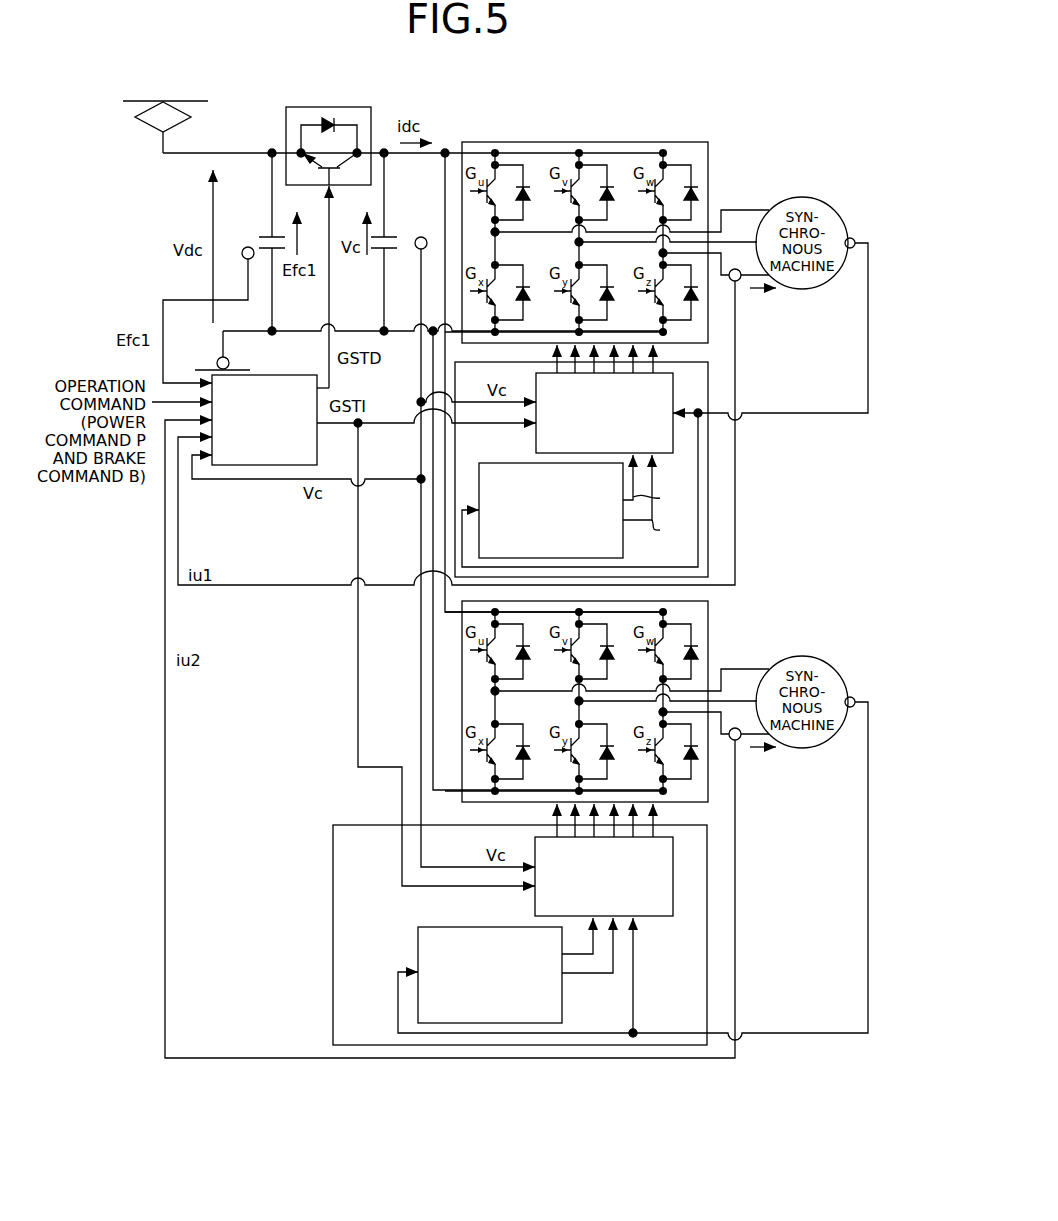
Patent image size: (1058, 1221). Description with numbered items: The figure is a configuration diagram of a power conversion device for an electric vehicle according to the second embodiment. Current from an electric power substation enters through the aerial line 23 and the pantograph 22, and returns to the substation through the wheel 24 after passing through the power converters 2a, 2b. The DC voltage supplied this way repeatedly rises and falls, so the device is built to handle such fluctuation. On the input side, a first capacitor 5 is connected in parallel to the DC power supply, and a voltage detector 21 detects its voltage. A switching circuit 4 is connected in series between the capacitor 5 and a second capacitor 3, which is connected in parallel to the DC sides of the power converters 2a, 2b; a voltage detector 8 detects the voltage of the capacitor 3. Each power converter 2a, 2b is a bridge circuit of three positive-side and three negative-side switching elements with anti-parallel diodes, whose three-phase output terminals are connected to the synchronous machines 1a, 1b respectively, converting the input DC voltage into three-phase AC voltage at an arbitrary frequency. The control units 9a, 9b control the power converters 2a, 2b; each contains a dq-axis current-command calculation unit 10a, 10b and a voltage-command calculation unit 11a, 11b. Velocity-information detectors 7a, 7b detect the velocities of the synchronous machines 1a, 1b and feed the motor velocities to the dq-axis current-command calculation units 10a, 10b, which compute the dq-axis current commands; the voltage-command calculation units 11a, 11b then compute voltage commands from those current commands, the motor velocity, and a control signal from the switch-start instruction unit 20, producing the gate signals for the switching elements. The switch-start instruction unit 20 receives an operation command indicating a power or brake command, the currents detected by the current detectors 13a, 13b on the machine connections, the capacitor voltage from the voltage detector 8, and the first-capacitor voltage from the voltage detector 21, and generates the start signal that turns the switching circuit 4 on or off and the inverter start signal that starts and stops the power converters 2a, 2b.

The synchronous machine 1a is at (800, 197).
The synchronous machine 1b is at (800, 656).
The power converter 2a is at (575, 142).
The power converter 2b is at (708, 605).
The capacitor 3 is at (387, 226).
The switching circuit 4 is at (325, 107).
The capacitor 5 is at (265, 231).
The velocity-information detector 7a is at (850, 238).
The velocity-information detector 7b is at (850, 697).
The voltage detector 8 is at (419, 250).
The control unit 9a is at (708, 475).
The control unit 9b is at (333, 935).
The dq-axis current-command calculation unit 10a is at (479, 473).
The dq-axis current-command calculation unit 10b is at (418, 942).
The voltage-command calculation unit 11a is at (673, 388).
The voltage-command calculation unit 11b is at (673, 916).
The current detector 13a is at (738, 282).
The current detector 13b is at (738, 741).
The switch-start instruction unit 20 is at (270, 375).
The voltage detector 21 is at (246, 247).
The pantograph 22 is at (140, 121).
The aerial line 23 is at (176, 101).
The wheel 24 is at (219, 357).